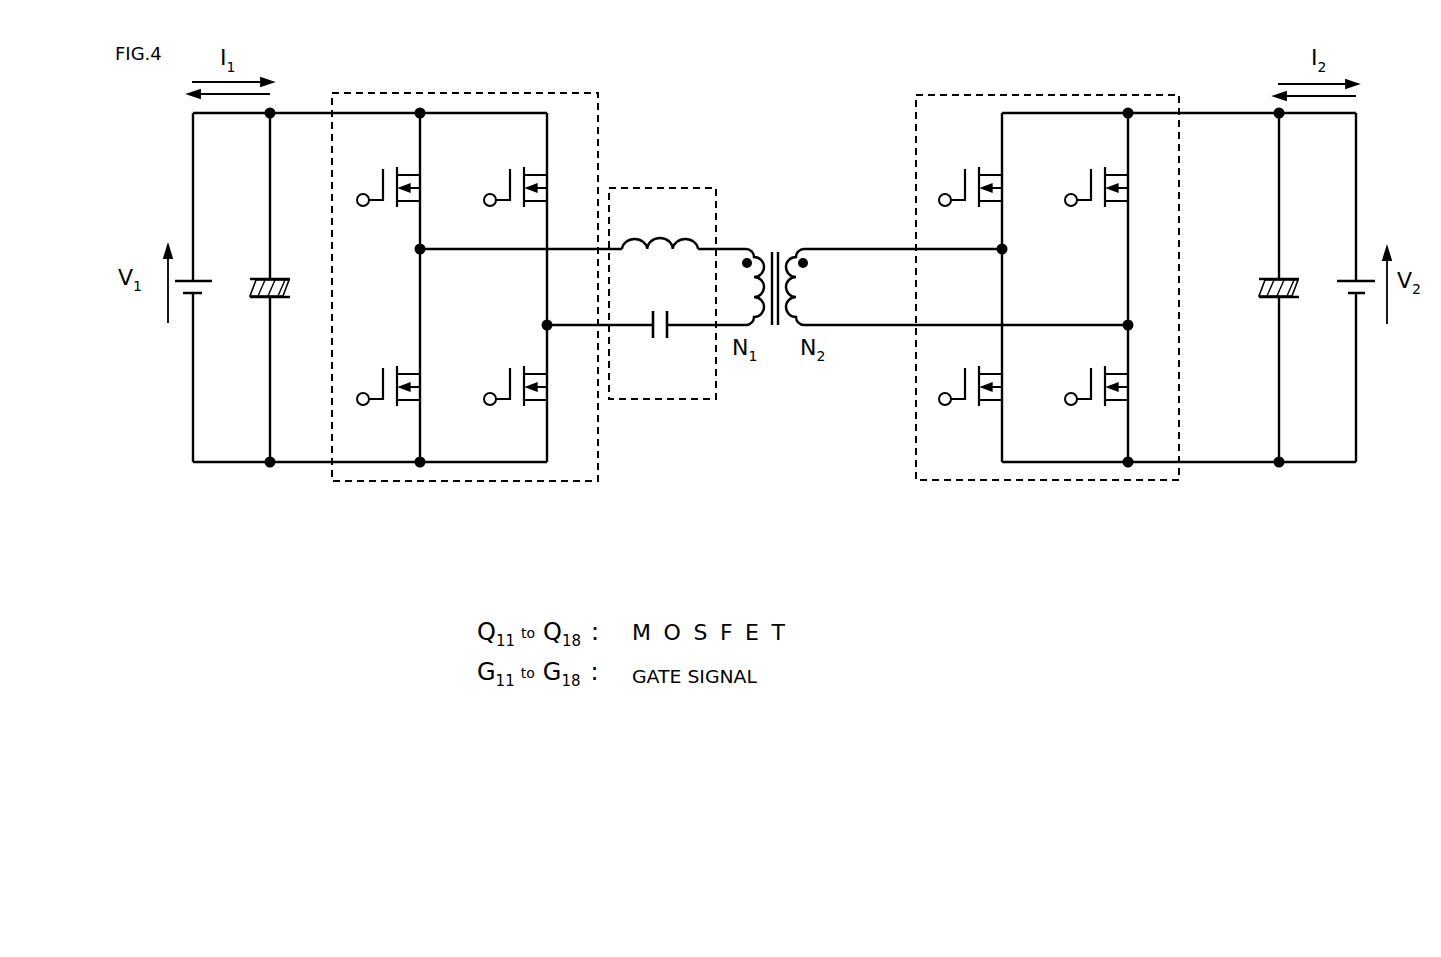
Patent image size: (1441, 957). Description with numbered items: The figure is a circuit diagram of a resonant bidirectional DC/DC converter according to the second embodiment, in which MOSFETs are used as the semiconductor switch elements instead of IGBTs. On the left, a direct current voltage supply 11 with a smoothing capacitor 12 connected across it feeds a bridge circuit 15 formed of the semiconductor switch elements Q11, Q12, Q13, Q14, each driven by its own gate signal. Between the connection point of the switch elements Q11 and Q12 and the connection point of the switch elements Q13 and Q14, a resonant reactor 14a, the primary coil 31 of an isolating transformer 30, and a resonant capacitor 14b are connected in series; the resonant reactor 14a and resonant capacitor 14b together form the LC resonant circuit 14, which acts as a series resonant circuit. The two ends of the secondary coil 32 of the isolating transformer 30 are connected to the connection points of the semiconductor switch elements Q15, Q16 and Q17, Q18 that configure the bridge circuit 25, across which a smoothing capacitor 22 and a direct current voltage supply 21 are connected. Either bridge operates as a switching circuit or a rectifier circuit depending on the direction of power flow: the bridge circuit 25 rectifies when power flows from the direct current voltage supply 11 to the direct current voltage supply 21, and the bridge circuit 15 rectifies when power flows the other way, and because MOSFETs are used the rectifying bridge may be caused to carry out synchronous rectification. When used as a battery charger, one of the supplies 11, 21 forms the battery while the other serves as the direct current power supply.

The direct current voltage supply 11 is at (185, 298).
The smoothing capacitor 12 is at (262, 305).
The LC resonant circuit 14 is at (700, 399).
The resonant reactor 14a is at (660, 228).
The resonant capacitor 14b is at (664, 340).
The bridge circuit 15 is at (343, 481).
The direct current voltage supply 21 is at (1345, 305).
The smoothing capacitor 22 is at (1258, 305).
The bridge circuit 25 is at (1160, 481).
The isolating transformer 30 is at (778, 248).
The primary coil 31 is at (742, 284).
The secondary coil 32 is at (803, 290).
The semiconductor switch element Q11 is at (378, 200).
The semiconductor switch element Q12 is at (378, 399).
The semiconductor switch element Q13 is at (505, 200).
The semiconductor switch element Q14 is at (505, 399).
The semiconductor switch element Q15 is at (960, 200).
The semiconductor switch element Q16 is at (960, 399).
The semiconductor switch element Q17 is at (1083, 200).
The semiconductor switch element Q18 is at (1083, 399).